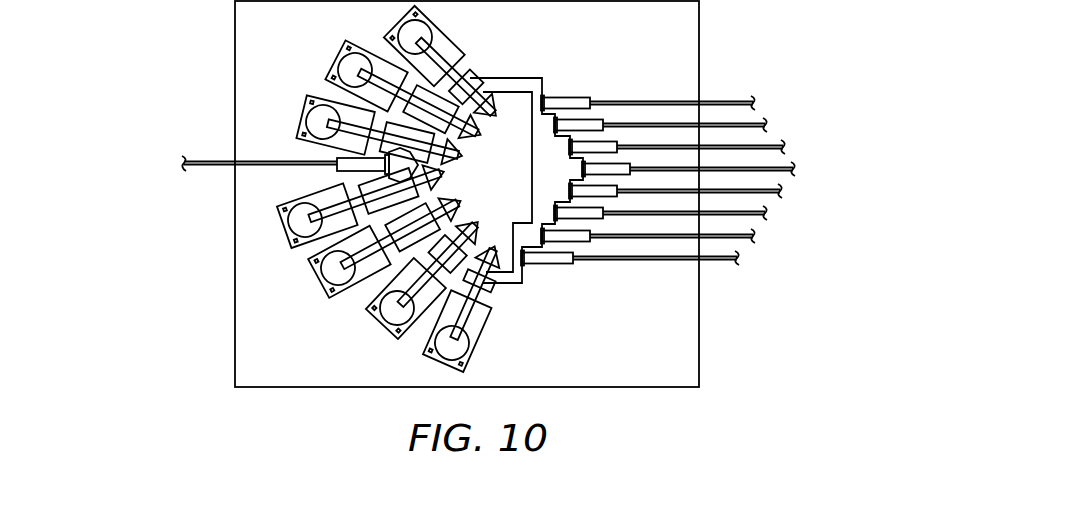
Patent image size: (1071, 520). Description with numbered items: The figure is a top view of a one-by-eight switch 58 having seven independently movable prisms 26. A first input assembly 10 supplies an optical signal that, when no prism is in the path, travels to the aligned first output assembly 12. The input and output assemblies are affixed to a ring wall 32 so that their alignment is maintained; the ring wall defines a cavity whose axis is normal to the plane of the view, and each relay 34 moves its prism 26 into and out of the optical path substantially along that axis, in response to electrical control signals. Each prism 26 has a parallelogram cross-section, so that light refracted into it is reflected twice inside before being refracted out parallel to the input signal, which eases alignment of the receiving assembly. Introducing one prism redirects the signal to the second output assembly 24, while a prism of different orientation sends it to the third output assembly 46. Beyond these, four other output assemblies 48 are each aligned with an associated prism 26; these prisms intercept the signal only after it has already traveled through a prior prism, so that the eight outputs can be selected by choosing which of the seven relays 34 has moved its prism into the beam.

The first input assembly 10 is at (300, 171).
The first output assembly 12 is at (684, 164).
The second output assembly 24 is at (621, 111).
The prism 26 is at (475, 181).
The ring wall 32 is at (526, 164).
The relay 34 is at (377, 194).
The third output assembly 46 is at (631, 241).
The output assembly 48 is at (584, 194).
The 1×8 switch 58 is at (494, 194).